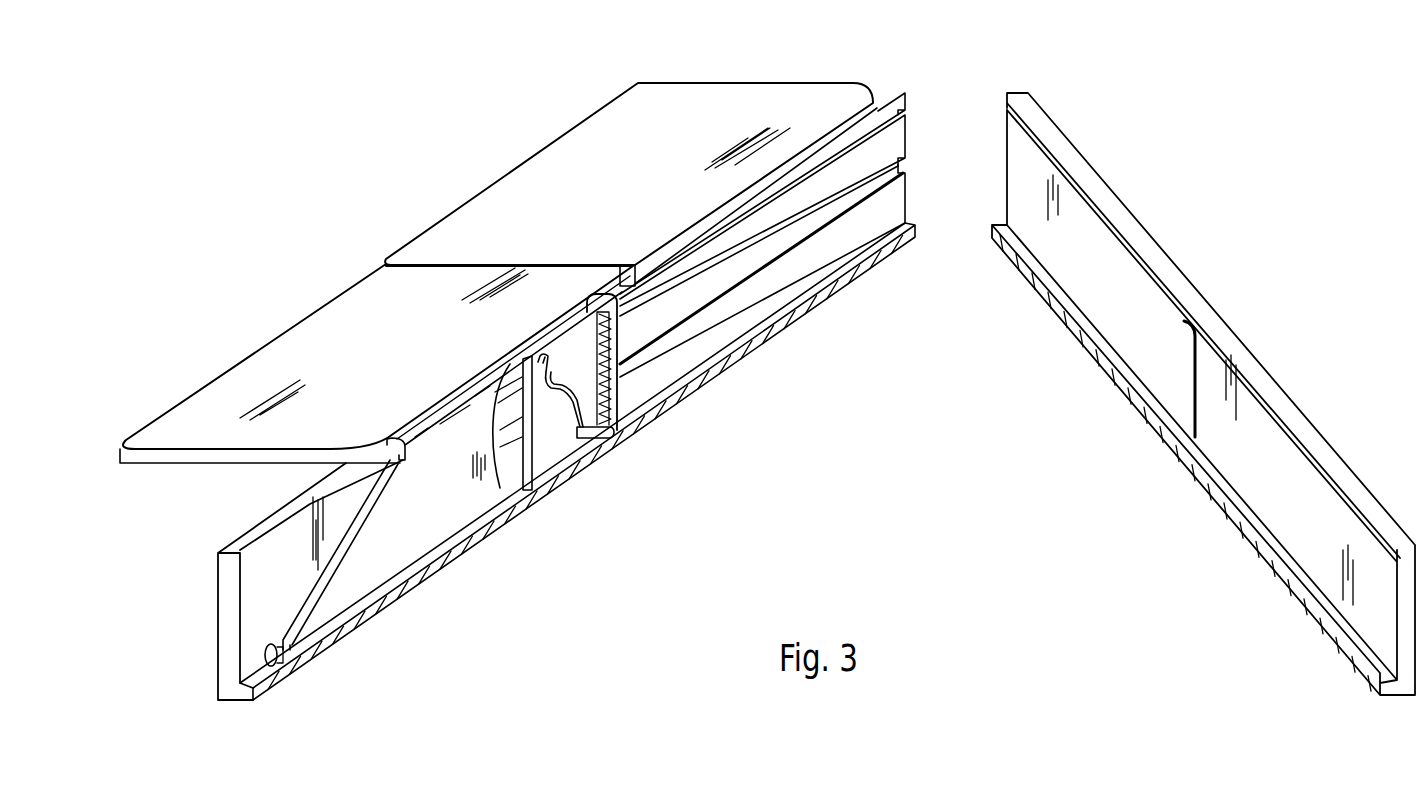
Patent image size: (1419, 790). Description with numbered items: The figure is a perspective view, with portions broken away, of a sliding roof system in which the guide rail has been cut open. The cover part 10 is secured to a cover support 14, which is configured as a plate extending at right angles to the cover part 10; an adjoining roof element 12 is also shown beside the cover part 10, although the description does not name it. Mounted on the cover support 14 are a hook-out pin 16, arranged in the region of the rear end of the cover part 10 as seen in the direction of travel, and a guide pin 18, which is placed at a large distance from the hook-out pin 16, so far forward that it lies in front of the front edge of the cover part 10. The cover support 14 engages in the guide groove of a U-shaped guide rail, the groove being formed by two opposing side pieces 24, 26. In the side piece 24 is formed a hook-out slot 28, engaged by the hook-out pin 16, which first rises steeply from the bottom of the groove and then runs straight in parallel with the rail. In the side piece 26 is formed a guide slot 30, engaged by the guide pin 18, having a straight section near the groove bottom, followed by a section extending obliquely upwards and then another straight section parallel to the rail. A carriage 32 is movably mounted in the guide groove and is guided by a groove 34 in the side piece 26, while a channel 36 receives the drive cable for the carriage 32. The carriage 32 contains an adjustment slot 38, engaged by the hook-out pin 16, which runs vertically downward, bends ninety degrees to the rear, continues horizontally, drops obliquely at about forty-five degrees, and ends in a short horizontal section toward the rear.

The cover part 10 is at (330, 300).
The second panel 12 is at (540, 172).
The cover support 14 is at (433, 525).
The hook-out pin 16 is at (598, 437).
The guide pin 18 is at (276, 667).
The side piece 24 is at (1280, 442).
The side piece 26 is at (897, 138).
The hook-out slot 28 is at (1095, 217).
The guide slot 30 is at (887, 104).
The carriage 32 is at (583, 390).
The groove 34 is at (853, 263).
The channel 36 is at (888, 173).
The adjustment slot 38 is at (565, 402).